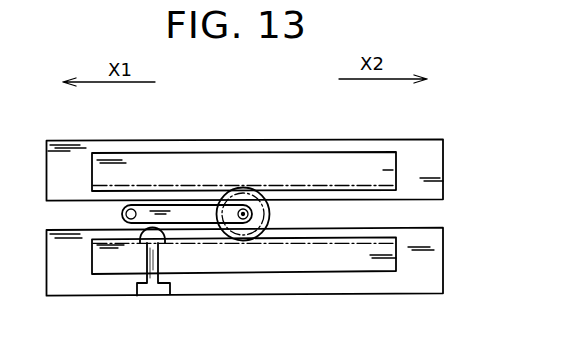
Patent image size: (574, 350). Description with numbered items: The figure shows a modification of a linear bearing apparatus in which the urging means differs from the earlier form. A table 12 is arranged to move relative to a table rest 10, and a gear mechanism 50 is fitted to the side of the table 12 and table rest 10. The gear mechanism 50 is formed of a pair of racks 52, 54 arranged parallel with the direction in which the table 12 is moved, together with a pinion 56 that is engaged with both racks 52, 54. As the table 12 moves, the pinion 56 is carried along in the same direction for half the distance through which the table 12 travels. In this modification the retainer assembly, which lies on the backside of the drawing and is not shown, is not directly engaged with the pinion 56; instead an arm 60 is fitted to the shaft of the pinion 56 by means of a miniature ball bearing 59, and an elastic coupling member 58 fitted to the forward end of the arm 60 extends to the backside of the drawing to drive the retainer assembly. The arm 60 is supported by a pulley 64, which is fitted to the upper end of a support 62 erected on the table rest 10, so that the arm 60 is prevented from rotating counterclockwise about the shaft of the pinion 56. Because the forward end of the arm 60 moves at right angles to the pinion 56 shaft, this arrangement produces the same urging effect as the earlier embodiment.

The table rest 10 is at (432, 245).
The table 12 is at (440, 143).
The gear mechanism 50 is at (271, 203).
The rack 52 is at (352, 262).
The rack 54 is at (244, 151).
The pinion 56 is at (262, 192).
The elastic coupling member 58 is at (124, 214).
The miniature ball bearing 59 is at (243, 208).
The arm 60 is at (184, 213).
The stud 62 is at (150, 250).
The pulley 64 is at (164, 230).